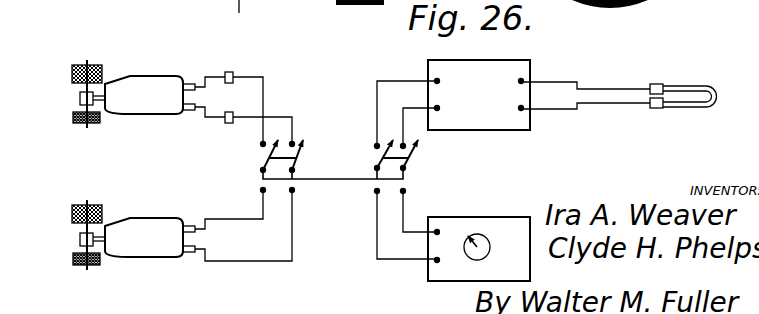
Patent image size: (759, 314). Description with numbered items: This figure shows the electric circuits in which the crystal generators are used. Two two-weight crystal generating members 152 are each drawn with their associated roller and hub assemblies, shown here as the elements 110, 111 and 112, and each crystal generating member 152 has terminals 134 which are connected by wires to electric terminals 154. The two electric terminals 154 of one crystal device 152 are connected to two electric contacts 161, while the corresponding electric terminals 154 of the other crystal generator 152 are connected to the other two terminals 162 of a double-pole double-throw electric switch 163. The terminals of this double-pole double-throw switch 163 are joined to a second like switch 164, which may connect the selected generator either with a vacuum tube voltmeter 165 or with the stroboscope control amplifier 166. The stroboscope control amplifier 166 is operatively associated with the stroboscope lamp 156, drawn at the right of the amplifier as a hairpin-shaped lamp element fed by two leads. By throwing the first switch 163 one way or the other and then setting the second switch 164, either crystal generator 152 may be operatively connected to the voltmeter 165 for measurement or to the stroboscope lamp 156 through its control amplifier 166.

The upper roller 110 is at (96, 66).
The lower roller 111 is at (96, 124).
The hub 112 is at (80, 101).
The terminals 134 is at (191, 82).
The crystal generating member 152 is at (144, 166).
The electric terminals 154 is at (232, 72).
The stroboscope lamp 156 is at (706, 86).
The electric contacts 161 is at (298, 139).
The terminals 162 is at (263, 188).
The double-pole double-throw electric switch 163 is at (296, 161).
The second like switch 164 is at (408, 170).
The vacuum tube voltmeter 165 is at (489, 221).
The stroboscope control amplifier 166 is at (479, 95).